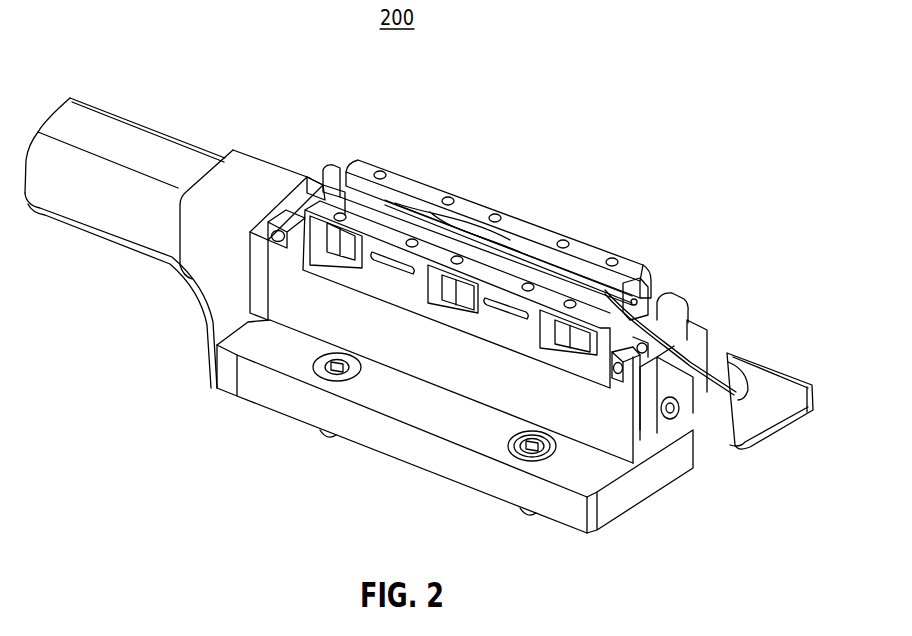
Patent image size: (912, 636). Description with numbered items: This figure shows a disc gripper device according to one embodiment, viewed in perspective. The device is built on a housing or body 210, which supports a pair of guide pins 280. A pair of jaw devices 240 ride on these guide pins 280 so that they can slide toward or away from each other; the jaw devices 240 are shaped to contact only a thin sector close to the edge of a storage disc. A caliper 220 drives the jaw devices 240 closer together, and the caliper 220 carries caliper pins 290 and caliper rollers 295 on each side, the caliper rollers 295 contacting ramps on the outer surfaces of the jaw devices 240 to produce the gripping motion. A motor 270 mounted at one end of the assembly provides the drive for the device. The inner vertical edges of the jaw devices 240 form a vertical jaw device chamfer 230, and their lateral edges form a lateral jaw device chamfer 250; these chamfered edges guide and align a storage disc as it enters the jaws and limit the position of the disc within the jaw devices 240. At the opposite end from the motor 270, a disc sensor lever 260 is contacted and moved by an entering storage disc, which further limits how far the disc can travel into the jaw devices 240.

The housing 210 is at (283, 358).
The caliper 220 is at (318, 178).
The vertical jaw device chamfer 230 is at (458, 232).
The jaw devices 240 is at (575, 293).
The lateral jaw device chamfer 250 is at (636, 305).
The disc sensor lever 260 is at (735, 384).
The motor 270 is at (111, 112).
The guide pins 280 is at (622, 378).
The caliper pins 290 is at (372, 167).
The caliper rollers 295 is at (336, 243).